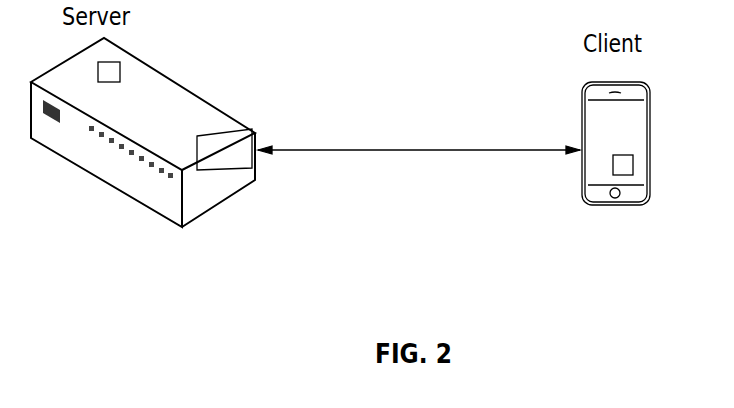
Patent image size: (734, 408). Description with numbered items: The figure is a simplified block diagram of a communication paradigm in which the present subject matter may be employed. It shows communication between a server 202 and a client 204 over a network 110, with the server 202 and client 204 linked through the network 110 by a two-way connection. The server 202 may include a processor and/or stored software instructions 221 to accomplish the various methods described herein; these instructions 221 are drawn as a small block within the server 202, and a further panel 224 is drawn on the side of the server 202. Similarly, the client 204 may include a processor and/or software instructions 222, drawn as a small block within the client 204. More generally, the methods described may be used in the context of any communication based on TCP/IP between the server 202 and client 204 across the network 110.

The server 202 is at (173, 123).
The stored software instructions 221 is at (120, 72).
The server storage panel 224 is at (257, 135).
The network 110 is at (468, 150).
The client 204 is at (633, 131).
The software instructions 222 is at (633, 165).